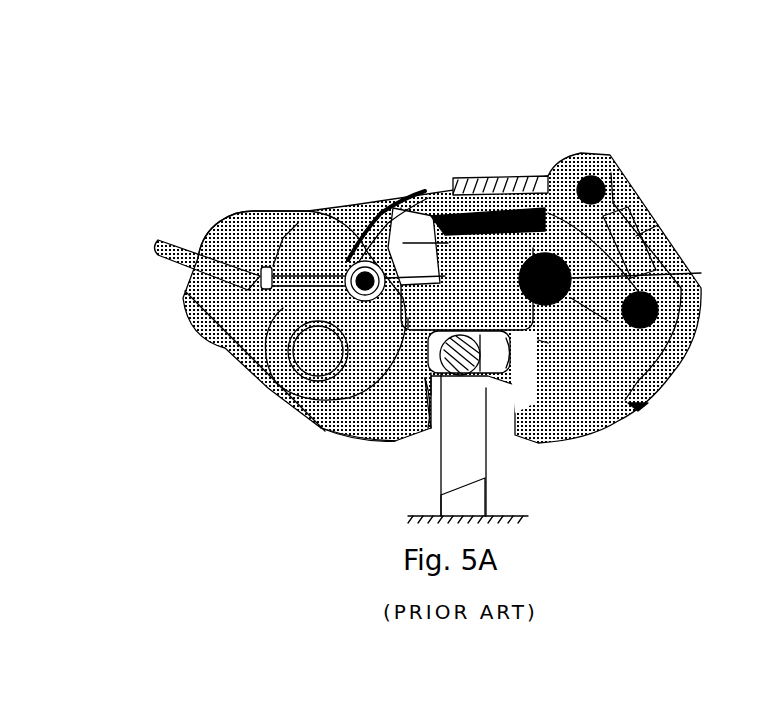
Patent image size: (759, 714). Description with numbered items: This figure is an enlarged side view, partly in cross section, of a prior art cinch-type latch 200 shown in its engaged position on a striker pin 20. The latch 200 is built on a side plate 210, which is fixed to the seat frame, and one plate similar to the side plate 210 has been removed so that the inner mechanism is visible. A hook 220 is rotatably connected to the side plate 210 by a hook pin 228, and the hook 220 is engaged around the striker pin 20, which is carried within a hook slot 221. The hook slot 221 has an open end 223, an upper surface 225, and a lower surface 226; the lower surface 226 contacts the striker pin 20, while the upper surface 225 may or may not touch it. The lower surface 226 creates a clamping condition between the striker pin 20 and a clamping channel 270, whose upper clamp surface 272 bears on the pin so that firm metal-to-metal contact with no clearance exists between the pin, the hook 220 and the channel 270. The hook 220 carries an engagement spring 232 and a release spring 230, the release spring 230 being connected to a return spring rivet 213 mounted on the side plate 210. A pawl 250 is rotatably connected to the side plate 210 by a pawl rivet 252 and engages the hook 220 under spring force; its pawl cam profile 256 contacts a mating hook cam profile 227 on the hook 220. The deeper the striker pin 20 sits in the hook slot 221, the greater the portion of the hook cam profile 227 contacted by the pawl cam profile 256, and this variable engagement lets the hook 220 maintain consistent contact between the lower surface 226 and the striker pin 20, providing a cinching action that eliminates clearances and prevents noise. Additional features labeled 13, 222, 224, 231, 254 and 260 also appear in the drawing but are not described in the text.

The ground 13 is at (505, 508).
The striker pin 20 is at (480, 453).
The cinch-type latch 200 is at (310, 440).
The side plate 210 is at (350, 433).
The return spring rivet 213 is at (597, 168).
The hook 220 is at (643, 397).
The hook slot 221 is at (535, 333).
The latch block 222 is at (507, 343).
The open end 223 is at (610, 317).
The stop 224 is at (385, 347).
The upper surface 225 is at (412, 350).
The lower surface 226 is at (478, 368).
The hook cam profile 227 is at (377, 205).
The hook pin 228 is at (563, 270).
The release spring 230 is at (648, 213).
The pin hole 231 is at (650, 318).
The engagement spring 232 is at (430, 277).
The pawl 250 is at (257, 280).
The pawl rivet 252 is at (257, 407).
The pivot 254 is at (253, 293).
The pawl cam profile 256 is at (280, 245).
The rod 260 is at (228, 199).
The clamping channel 270 is at (422, 385).
The upper clamp surface 272 is at (445, 288).